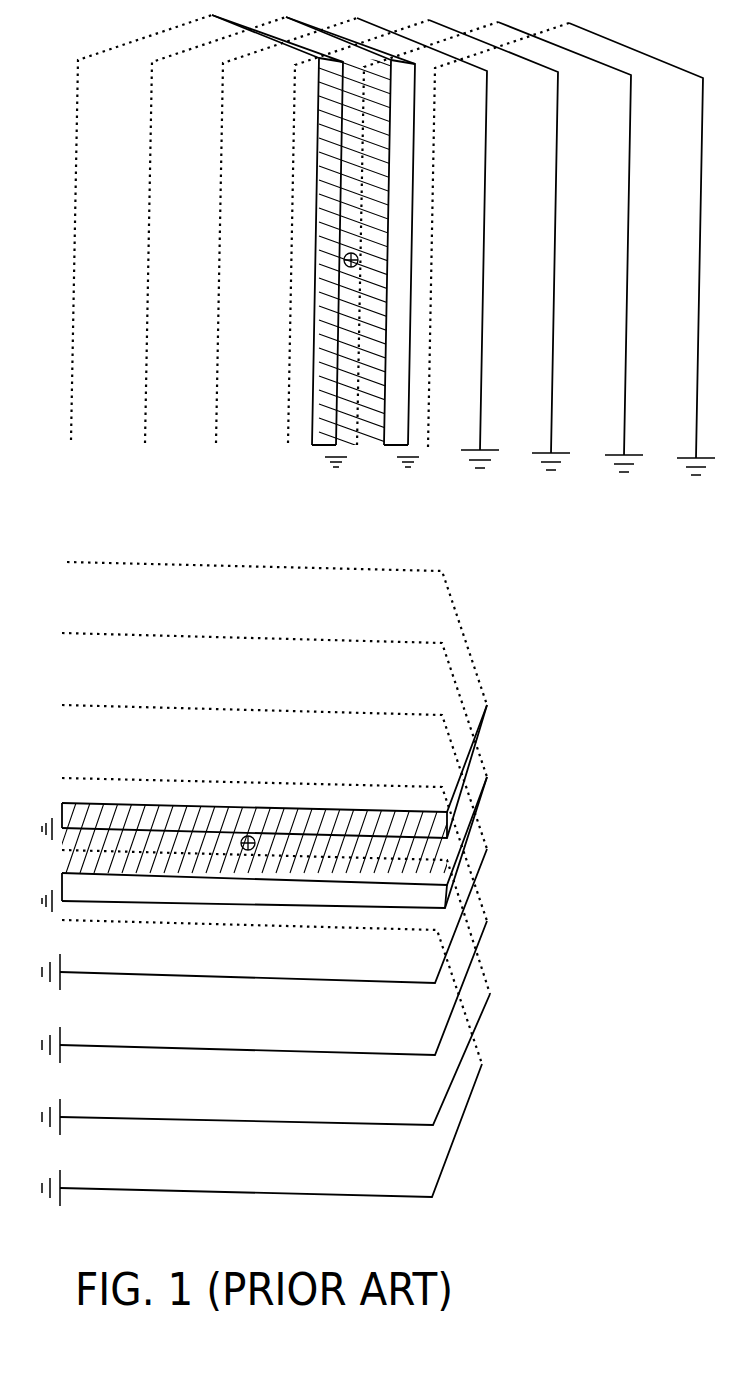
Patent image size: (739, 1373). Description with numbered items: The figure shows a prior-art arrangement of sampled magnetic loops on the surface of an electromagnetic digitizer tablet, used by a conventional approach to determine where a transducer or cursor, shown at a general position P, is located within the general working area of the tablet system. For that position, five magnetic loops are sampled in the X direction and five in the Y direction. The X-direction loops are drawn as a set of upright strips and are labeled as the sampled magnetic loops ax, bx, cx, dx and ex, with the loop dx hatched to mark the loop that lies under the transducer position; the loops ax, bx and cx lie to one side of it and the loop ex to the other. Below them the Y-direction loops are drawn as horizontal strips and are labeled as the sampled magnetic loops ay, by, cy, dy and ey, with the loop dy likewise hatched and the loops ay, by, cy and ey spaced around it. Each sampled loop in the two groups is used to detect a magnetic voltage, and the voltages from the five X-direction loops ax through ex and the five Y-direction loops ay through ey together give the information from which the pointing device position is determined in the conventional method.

The sampled magnetic loop in X direction ax is at (210, 243).
The sampled magnetic loop in X direction bx is at (282, 244).
The sampled magnetic loop in X direction cx is at (354, 244).
The sampled magnetic loop in X direction dx is at (425, 247).
The sampled magnetic loop in X direction ex is at (494, 249).
The sampled magnetic loop in Y direction ay is at (258, 701).
The sampled magnetic loop in Y direction by is at (258, 773).
The sampled magnetic loop in Y direction cy is at (257, 845).
The sampled magnetic loop in Y direction dy is at (258, 918).
The sampled magnetic loop in Y direction ey is at (254, 988).